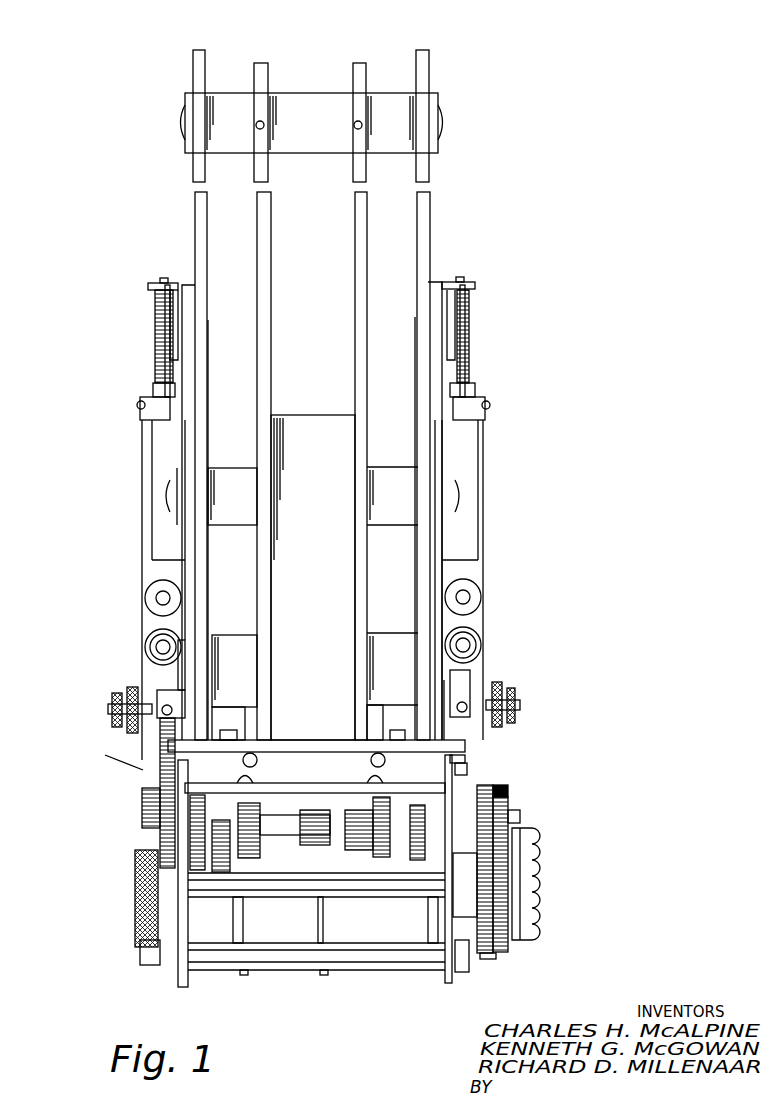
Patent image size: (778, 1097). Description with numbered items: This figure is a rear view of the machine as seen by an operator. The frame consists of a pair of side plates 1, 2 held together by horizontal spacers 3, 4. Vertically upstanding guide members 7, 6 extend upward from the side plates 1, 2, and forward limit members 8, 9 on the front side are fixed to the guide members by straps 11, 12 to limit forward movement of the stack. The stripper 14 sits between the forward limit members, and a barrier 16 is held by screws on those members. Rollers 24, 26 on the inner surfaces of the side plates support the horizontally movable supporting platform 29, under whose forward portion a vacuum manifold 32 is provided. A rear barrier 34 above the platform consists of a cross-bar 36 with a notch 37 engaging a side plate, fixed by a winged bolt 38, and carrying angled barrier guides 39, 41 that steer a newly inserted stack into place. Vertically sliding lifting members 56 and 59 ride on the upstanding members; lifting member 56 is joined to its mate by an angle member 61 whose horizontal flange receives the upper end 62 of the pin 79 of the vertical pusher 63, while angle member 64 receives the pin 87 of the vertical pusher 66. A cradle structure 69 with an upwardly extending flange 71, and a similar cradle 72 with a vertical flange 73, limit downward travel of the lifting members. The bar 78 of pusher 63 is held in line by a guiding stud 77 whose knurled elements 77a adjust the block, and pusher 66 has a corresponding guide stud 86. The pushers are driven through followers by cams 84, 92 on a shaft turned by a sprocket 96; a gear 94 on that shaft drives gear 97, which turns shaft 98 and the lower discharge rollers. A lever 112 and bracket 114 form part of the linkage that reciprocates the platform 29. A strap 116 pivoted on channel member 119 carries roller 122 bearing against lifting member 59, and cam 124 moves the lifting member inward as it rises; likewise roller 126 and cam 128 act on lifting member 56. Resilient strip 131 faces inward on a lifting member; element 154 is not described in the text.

The side plate 1 is at (178, 985).
The side plate 2 is at (445, 981).
The horizontal spacer 3 is at (385, 884).
The horizontal spacer 4 is at (300, 962).
The vertically upstanding guide member 6 is at (430, 54).
The vertically upstanding guide member 7 is at (199, 60).
The forward limit member 8 is at (360, 66).
The forward limit member 9 is at (262, 68).
The strap 11 is at (312, 147).
The strap 12 is at (242, 475).
The stripper 14 is at (303, 422).
The barrier 16 is at (240, 645).
The roller 24 is at (192, 813).
The roller 26 is at (430, 798).
The supporting platform 29 is at (267, 785).
The manifold 32 is at (283, 800).
The rear barrier 34 is at (321, 730).
The cross-bar 36 is at (290, 740).
The notch 37 is at (460, 760).
The bolt 38 is at (463, 772).
The barrier guide 39 is at (381, 706).
The barrier guide 41 is at (250, 708).
The lifting member 56 is at (190, 364).
The lifting member 59 is at (440, 388).
The angle member 61 is at (170, 284).
The upper end of pin 62 is at (158, 283).
The vertical pusher 63 is at (132, 439).
The angle member 64 is at (445, 283).
The vertical pusher 66 is at (494, 452).
The cradle structure 69 is at (158, 325).
The upwardly extending flange 71 is at (172, 301).
The cradle 72 is at (472, 325).
The vertical flange 73 is at (470, 300).
The guiding stud 77 is at (106, 709).
The knurled elements 77a is at (118, 690).
The bar 78 is at (147, 505).
The adjustable pin 79 is at (158, 348).
The cam 84 is at (140, 948).
The vertical guide stud 86 is at (517, 694).
The adjustable pin 87 is at (470, 348).
The cam 92 is at (485, 958).
The gear 94 is at (497, 950).
The sprocket 96 is at (538, 833).
The gear 97 is at (502, 792).
The shaft 98 is at (518, 815).
The lever 112 is at (318, 916).
The bracket 114 is at (318, 836).
The strap 116 is at (466, 675).
The channel member 119 is at (472, 562).
The roller 122 is at (478, 640).
The cam 124 is at (450, 688).
The roller 126 is at (157, 636).
The cam 128 is at (185, 680).
The strip of resilient material 131 is at (206, 394).
The plate 154 is at (422, 558).